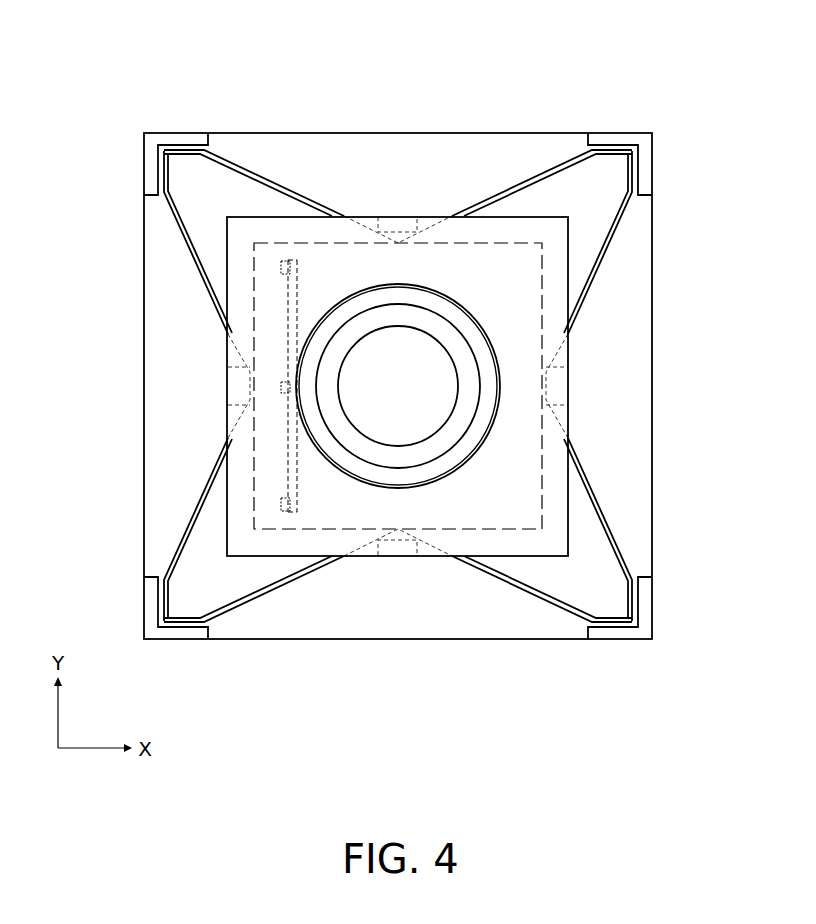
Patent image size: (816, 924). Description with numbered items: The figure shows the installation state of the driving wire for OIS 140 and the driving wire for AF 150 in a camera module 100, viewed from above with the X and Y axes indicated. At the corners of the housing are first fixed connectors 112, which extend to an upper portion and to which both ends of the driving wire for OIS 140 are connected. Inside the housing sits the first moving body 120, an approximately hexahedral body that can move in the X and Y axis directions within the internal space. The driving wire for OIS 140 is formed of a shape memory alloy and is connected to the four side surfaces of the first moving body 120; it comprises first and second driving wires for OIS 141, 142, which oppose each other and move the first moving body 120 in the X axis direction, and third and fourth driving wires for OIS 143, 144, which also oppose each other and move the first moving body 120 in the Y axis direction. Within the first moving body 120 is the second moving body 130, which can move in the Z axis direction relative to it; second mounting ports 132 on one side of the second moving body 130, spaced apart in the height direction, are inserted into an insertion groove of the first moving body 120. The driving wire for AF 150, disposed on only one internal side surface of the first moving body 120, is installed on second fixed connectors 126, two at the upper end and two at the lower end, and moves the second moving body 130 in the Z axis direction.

The camera module 100 is at (373, 18).
The first fixed connector 112 is at (175, 133).
The first moving body 120 is at (555, 488).
The second fixed connector 126 is at (283, 264).
The second moving body 130 is at (465, 323).
The second mounting port 132 is at (285, 388).
The driving wire for OIS 140 is at (396, 447).
The first driving wire for OIS 141 is at (190, 517).
The second driving wire for OIS 142 is at (605, 523).
The third driving wire for OIS 143 is at (528, 592).
The fourth driving wire for OIS 144 is at (528, 180).
The driving wire for AF 150 is at (297, 323).